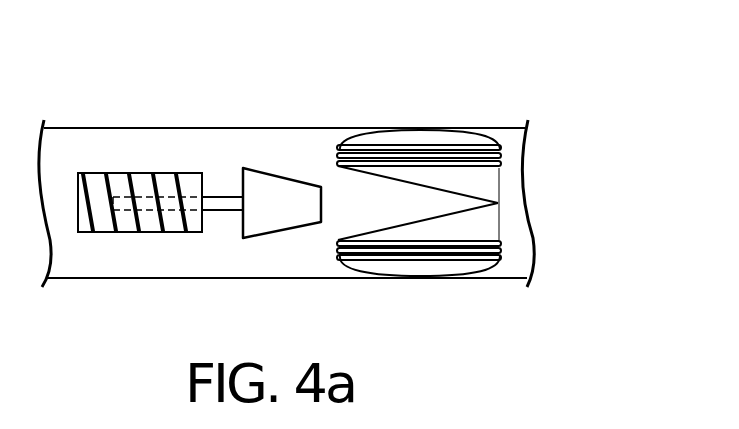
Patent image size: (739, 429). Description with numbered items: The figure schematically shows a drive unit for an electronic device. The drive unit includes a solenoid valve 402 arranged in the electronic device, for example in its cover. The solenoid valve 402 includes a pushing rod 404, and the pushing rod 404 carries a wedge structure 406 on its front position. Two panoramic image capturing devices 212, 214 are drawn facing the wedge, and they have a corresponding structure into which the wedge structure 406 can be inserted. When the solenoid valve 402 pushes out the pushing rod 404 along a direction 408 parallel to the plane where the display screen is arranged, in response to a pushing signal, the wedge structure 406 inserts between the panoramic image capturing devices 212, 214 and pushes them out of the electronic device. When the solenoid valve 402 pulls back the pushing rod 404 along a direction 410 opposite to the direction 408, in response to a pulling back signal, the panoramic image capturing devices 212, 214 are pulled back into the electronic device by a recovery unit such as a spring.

The solenoid valve 402 is at (121, 171).
The pushing rod 404 is at (217, 196).
The wedge structure 406 is at (284, 171).
The direction 408 is at (390, 17).
The direction 410 is at (327, 71).
The panoramic image capturing device 212 is at (500, 180).
The panoramic image capturing device 214 is at (500, 220).